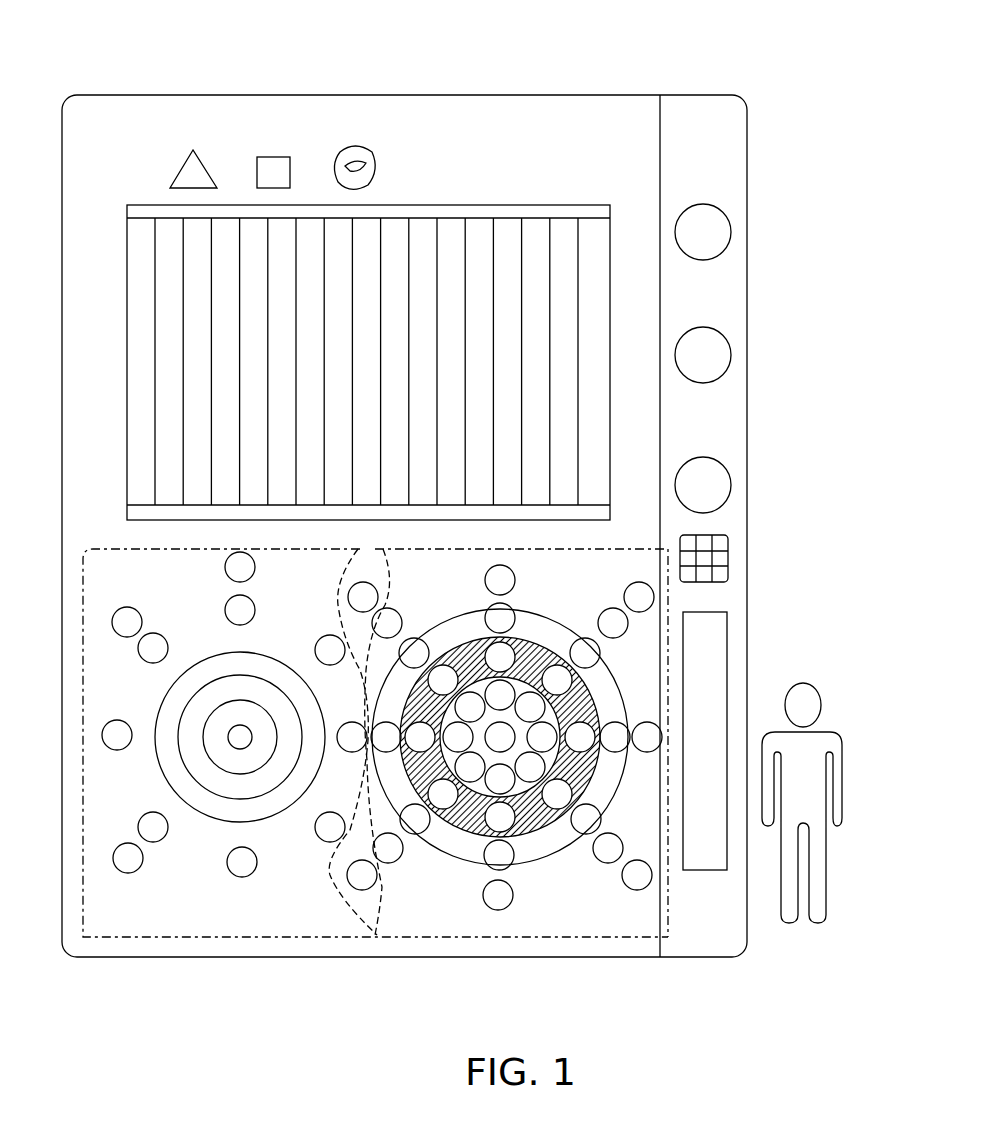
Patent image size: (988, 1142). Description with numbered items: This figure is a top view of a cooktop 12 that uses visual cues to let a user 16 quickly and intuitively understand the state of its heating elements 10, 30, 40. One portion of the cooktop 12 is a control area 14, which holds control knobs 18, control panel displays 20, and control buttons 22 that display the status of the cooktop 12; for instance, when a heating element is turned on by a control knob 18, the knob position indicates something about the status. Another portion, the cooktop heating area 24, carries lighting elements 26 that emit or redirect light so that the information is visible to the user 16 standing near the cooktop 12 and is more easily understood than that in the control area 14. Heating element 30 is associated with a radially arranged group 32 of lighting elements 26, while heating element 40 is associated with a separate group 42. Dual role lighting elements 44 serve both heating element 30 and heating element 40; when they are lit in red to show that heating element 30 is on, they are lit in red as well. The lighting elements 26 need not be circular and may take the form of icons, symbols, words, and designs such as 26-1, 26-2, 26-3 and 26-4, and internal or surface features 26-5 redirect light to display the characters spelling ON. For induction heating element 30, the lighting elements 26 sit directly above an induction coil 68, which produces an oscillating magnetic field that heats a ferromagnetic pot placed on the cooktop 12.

The heating element 10 is at (422, 204).
The cooktop 12 is at (392, 58).
The control area 14 is at (700, 95).
The user 16 is at (808, 683).
The control knobs 18 is at (718, 205).
The control panel displays 20 is at (716, 612).
The control buttons 22 is at (716, 535).
The cooktop heating area 24 is at (462, 554).
The lighting elements 26 is at (238, 552).
The lighting element design 26-1 is at (195, 150).
The lighting element design 26-2 is at (275, 157).
The lighting element design 26-3 is at (367, 155).
The lighting element design 26-4 is at (528, 158).
The internal or surface features 26-5 is at (180, 885).
The heating element 30 is at (499, 719).
The group of lighting elements 32 is at (490, 937).
The heating element 40 is at (255, 655).
The group of lighting elements 42 is at (250, 940).
The dual role lighting elements 44 is at (372, 575).
The induction coil 68 is at (585, 705).